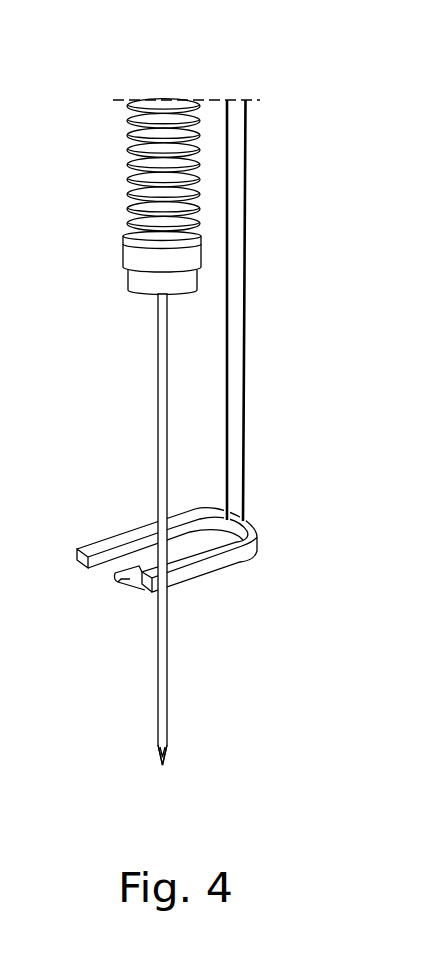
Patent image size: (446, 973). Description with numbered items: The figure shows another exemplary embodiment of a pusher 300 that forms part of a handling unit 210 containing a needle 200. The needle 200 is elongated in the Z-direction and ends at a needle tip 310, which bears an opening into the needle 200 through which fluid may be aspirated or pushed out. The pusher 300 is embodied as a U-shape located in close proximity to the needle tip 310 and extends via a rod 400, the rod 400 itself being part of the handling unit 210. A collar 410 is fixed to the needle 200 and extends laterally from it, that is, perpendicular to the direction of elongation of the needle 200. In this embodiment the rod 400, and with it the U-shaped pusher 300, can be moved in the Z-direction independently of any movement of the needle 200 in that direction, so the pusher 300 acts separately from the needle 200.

The handling unit 210 is at (207, 89).
The rod 400 is at (242, 358).
The collar 410 is at (118, 583).
The pusher 300 is at (210, 570).
The needle 200 is at (162, 720).
The needle tip 310 is at (167, 748).